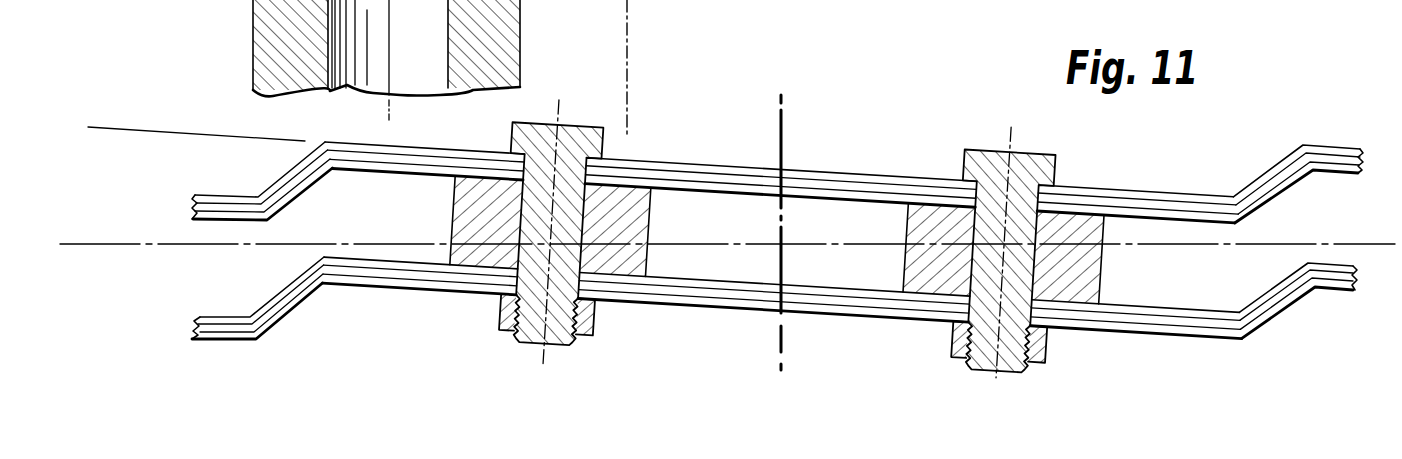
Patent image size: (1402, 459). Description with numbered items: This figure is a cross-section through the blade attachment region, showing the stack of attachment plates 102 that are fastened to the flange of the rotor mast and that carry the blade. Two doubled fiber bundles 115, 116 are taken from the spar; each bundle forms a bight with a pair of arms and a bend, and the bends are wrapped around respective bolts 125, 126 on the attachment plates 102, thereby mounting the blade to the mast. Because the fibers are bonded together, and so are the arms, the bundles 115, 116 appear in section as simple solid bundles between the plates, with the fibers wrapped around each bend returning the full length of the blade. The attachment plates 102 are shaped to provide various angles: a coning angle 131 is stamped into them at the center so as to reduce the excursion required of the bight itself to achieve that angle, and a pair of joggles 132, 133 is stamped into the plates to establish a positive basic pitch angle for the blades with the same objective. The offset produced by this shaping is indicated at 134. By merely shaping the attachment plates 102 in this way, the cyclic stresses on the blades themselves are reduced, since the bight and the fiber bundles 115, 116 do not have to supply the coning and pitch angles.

The attachment plates 102 is at (777, 241).
The bundle 115 is at (650, 220).
The bundle 116 is at (1107, 235).
The bolt 125 is at (532, 122).
The bolt 126 is at (988, 151).
The coning angle 131 is at (628, 112).
The joggle 132 is at (304, 303).
The joggle 133 is at (1280, 312).
The offset dimension 134 is at (127, 240).